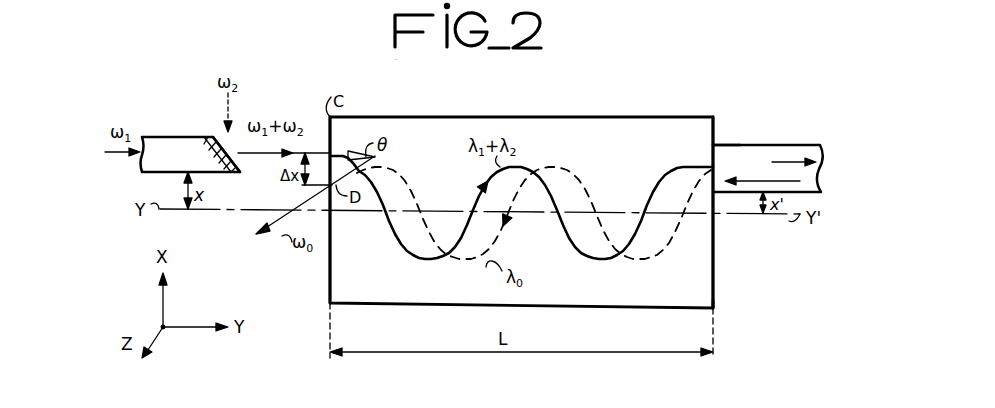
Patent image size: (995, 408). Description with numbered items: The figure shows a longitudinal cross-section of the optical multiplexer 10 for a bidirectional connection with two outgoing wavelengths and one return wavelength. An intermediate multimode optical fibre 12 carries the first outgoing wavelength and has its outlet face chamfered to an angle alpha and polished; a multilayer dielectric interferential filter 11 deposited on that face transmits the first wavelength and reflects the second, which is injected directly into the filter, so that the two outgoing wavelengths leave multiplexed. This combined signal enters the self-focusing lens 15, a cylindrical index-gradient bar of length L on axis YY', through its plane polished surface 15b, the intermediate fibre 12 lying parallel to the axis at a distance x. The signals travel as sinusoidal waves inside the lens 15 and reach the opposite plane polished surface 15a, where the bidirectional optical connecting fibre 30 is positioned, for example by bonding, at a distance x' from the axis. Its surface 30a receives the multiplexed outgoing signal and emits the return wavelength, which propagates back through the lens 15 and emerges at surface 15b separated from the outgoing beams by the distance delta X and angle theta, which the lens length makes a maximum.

The optical multiplexer 10 is at (742, 307).
The multilayer dielectric interferential filter 11 is at (241, 169).
The intermediate multimode optical fibre 12 is at (186, 137).
The self-focusing lens 15 is at (505, 114).
The plane polished surface of the lens 15a is at (713, 290).
The plane polished surface of the lens 15b is at (330, 272).
The optical connecting fibre 30 is at (787, 145).
The surface of the connecting fibre 30a is at (725, 145).